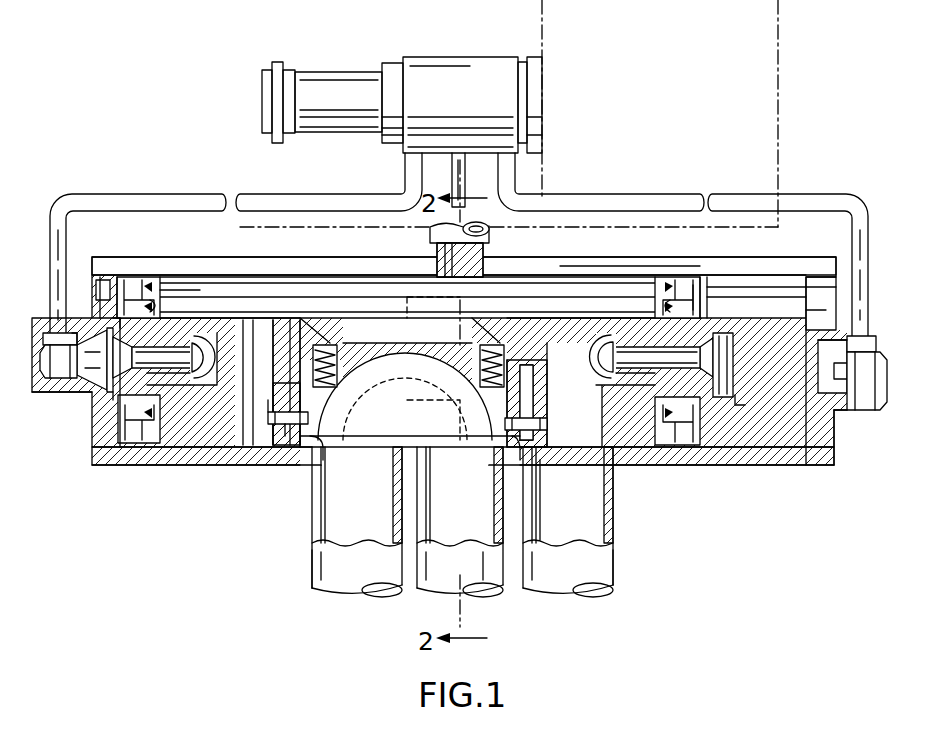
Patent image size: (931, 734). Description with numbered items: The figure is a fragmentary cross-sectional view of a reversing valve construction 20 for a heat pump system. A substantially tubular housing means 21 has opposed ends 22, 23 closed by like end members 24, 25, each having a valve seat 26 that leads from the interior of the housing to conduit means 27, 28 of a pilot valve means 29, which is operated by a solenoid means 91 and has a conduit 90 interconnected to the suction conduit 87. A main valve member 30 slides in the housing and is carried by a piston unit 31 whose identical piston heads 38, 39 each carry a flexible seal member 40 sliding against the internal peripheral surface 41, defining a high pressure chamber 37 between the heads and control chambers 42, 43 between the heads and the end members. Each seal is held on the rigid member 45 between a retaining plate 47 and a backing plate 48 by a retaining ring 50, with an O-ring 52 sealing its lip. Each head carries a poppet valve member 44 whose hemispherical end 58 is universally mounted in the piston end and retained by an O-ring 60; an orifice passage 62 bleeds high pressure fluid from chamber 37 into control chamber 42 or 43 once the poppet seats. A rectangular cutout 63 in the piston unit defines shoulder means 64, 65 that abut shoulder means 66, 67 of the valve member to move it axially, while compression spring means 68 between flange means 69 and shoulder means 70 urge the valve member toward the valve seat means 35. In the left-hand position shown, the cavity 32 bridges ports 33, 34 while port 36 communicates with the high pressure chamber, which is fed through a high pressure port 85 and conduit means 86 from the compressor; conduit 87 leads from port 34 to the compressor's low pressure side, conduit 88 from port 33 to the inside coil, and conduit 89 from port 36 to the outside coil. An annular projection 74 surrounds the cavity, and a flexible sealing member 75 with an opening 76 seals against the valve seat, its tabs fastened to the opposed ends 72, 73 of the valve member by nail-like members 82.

The reversing valve construction 20 is at (757, 546).
The housing means 21 is at (780, 465).
The end of housing means 22 is at (100, 462).
The end of housing means 23 is at (834, 460).
The end member 24 is at (88, 368).
The end member 25 is at (873, 408).
The valve seat 26 is at (100, 400).
The conduit means 27 is at (85, 192).
The conduit means 28 is at (862, 207).
The pilot valve means 29 is at (456, 52).
The main valve member 30 is at (297, 445).
The piston unit 31 is at (303, 277).
The cavity 32 is at (327, 500).
The port 33 is at (377, 450).
The port 34 is at (485, 447).
The valve seat means 35 is at (310, 455).
The port 36 is at (612, 486).
The high pressure chamber 37 is at (598, 272).
The piston head 38 is at (174, 291).
The piston head 39 is at (704, 296).
The flexible seal member 40 is at (152, 277).
The internal peripheral surface 41 is at (742, 452).
The control chamber 42 is at (126, 443).
The control chamber 43 is at (780, 297).
The poppet valve member 44 is at (97, 372).
The rigid member 45 is at (203, 395).
The retaining plate 47 is at (127, 287).
The backing plate 48 is at (178, 302).
The retaining ring 50 is at (118, 315).
The O-ring 52 is at (153, 420).
The hemispherical end 58 is at (208, 353).
The O-ring 60 is at (188, 372).
The orifice passage 62 is at (200, 320).
The cutout 63 is at (345, 315).
The shoulder means 64 is at (300, 375).
The shoulder means 65 is at (507, 375).
The shoulder means 66 is at (280, 412).
The shoulder means 67 is at (515, 398).
The compression spring means 68 is at (335, 395).
The flange means 69 is at (315, 318).
The shoulder means 70 is at (338, 360).
The end of valve member 72 is at (285, 436).
The end of valve member 73 is at (543, 465).
The annular projection 74 is at (525, 475).
The sealing member 75 is at (490, 452).
The opening 76 is at (323, 470).
The nail-like member 82 is at (270, 432).
The high pressure port 85 is at (490, 232).
The conduit means 86 is at (460, 232).
The conduit 87 is at (507, 570).
The conduit 88 is at (312, 560).
The conduit 89 is at (613, 568).
The conduit 90 is at (450, 175).
The solenoid means 91 is at (782, 88).